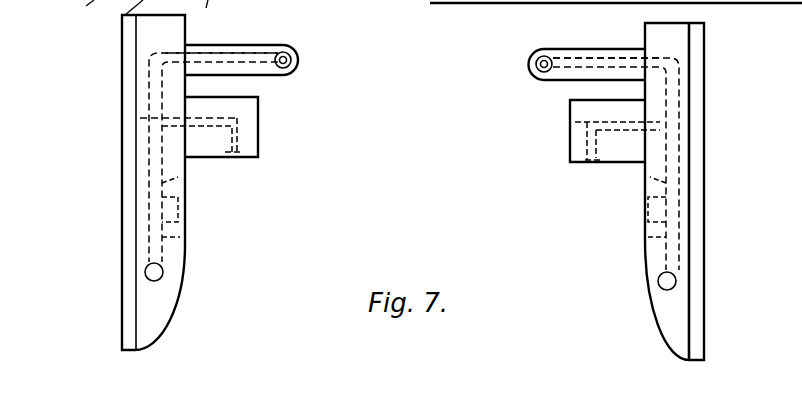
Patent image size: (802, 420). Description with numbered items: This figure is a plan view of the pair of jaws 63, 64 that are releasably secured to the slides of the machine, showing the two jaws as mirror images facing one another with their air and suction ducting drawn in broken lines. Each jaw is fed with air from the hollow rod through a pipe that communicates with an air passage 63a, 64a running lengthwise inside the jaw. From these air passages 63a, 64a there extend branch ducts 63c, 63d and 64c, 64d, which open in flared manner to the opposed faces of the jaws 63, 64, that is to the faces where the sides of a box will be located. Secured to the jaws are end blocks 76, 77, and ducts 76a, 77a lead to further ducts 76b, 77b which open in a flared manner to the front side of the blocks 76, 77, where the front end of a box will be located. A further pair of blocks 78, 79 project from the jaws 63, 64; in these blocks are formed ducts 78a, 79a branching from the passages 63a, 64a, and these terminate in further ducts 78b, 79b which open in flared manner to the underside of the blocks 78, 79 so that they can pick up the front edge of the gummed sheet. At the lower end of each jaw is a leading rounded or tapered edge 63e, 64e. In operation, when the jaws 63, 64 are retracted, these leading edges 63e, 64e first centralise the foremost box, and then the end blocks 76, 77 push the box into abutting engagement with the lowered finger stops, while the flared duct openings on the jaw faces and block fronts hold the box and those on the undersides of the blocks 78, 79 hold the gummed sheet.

The jaw 63 is at (706, 249).
The air passage 63a is at (696, 96).
The branch duct 63c is at (647, 195).
The branch duct 63d is at (700, 8).
The leading rounded or tapered edge 63e is at (657, 321).
The jaw 64 is at (121, 228).
The air passage 64a is at (140, 118).
The branch duct 64c is at (185, 191).
The branch duct 64d is at (120, 22).
The leading rounded or tapered edge 64e is at (177, 301).
The block 76 is at (570, 162).
The duct 76a is at (574, 121).
The further duct 76b is at (585, 160).
The block 77 is at (258, 157).
The duct 77a is at (276, 103).
The further duct 77b is at (225, 152).
The block 78 is at (534, 54).
The duct 78a is at (586, 58).
The further duct 78b is at (536, 70).
The block 79 is at (279, 45).
The duct 79a is at (239, 53).
The further duct 79b is at (296, 62).